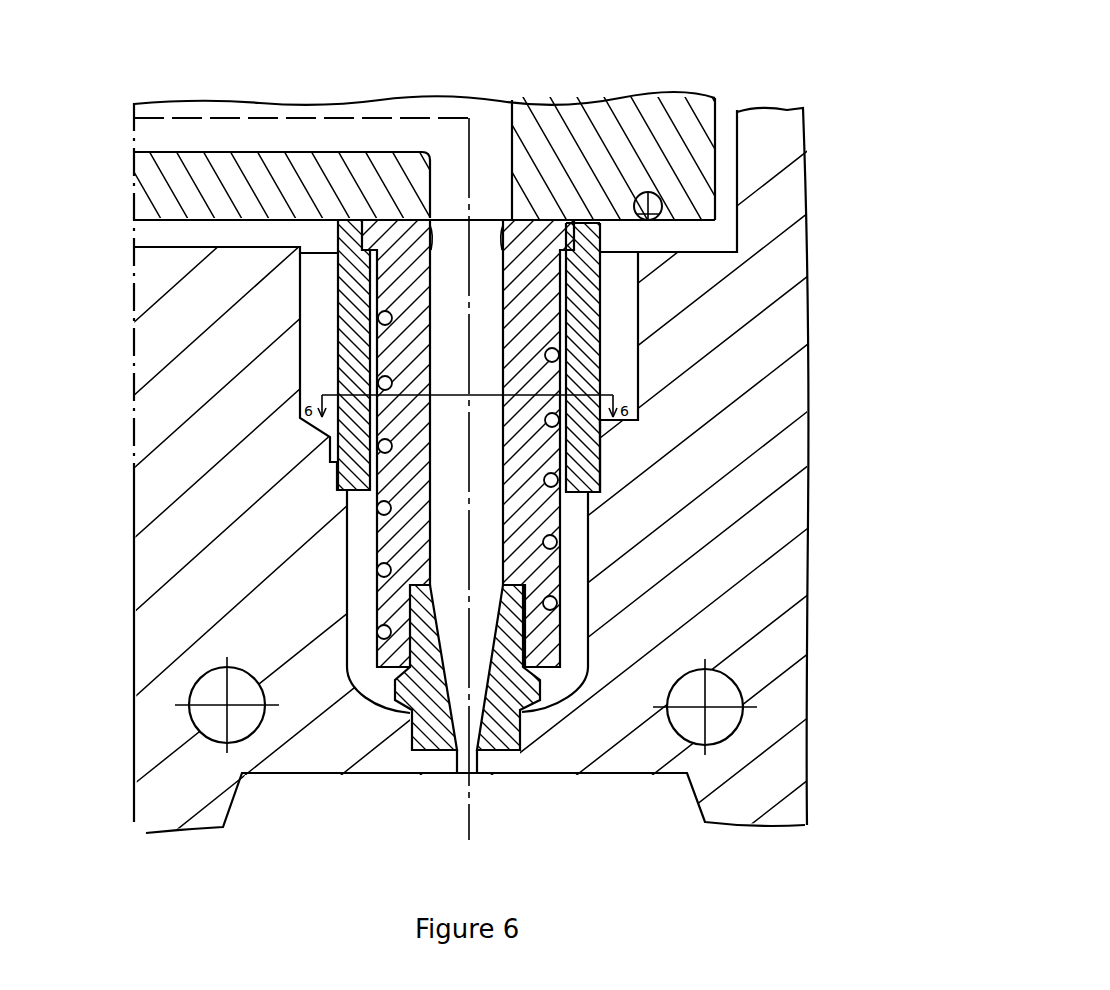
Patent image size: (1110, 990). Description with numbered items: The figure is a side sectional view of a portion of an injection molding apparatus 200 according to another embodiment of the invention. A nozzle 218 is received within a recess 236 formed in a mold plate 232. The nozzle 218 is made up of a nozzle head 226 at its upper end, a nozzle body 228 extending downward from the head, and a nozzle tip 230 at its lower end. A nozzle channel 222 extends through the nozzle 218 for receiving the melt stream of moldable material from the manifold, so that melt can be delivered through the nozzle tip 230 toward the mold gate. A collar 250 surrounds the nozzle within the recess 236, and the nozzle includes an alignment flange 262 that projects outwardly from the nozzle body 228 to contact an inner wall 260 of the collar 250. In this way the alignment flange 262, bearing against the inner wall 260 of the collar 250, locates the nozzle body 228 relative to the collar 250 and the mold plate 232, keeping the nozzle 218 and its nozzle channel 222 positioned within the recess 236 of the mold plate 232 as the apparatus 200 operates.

The injection molding apparatus 200 is at (693, 72).
The nozzle 218 is at (398, 538).
The nozzle channel 222 is at (478, 512).
The nozzle head 226 is at (598, 228).
The nozzle body 228 is at (538, 508).
The nozzle tip 230 is at (521, 752).
The mold plate 232 is at (152, 433).
The recess 236 is at (352, 618).
The collar 250 is at (357, 290).
The inner wall 260 is at (368, 373).
The alignment flange 262 is at (600, 425).